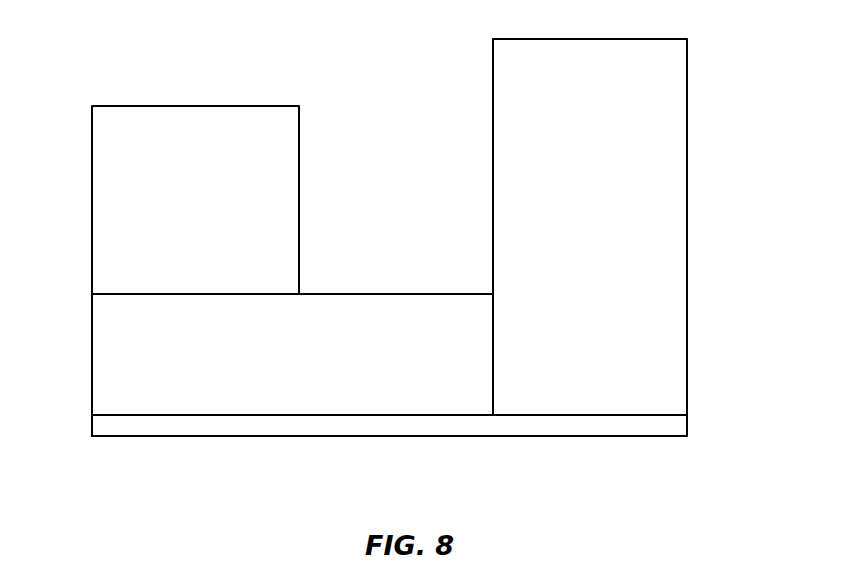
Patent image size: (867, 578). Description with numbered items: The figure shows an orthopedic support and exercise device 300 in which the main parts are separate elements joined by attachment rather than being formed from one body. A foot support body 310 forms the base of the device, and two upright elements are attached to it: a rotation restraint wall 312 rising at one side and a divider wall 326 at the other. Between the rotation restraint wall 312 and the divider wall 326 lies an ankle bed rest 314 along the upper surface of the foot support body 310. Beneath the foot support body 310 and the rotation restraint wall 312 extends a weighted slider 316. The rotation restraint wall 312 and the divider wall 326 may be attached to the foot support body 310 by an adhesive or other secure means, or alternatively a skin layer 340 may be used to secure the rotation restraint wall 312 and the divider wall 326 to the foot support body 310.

The orthopedic support and exercise device 300 is at (429, 264).
The foot support body 310 is at (147, 367).
The rotation restraint wall 312 is at (665, 96).
The ankle bed rest 314 is at (372, 293).
The weighted slider 316 is at (619, 427).
The divider wall 326 is at (137, 184).
The skin layer 340 is at (318, 401).